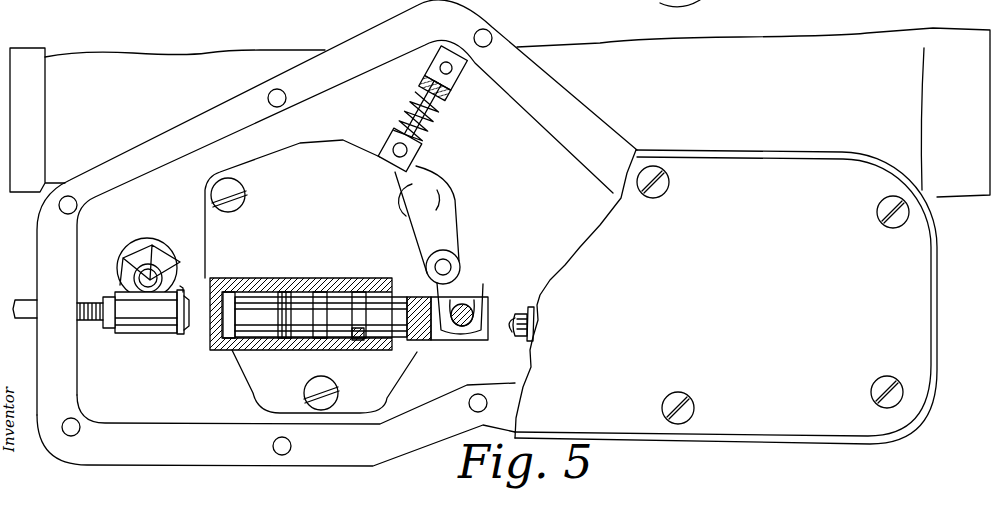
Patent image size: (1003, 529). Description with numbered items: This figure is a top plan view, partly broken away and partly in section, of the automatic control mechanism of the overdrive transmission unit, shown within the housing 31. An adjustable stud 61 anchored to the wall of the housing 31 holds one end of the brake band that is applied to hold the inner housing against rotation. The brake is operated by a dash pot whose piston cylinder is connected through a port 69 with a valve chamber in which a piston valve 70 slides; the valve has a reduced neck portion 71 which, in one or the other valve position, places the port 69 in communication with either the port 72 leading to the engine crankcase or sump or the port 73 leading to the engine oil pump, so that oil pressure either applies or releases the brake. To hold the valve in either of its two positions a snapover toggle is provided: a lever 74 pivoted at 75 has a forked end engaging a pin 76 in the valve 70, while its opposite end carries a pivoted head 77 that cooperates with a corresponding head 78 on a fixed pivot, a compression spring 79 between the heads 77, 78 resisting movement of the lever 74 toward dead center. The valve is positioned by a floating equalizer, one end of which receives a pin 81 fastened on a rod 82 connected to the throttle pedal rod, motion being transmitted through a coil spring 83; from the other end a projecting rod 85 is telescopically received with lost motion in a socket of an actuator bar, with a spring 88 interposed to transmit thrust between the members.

The housing 31 is at (845, 20).
The adjustable stud 61 is at (135, 262).
The port 69 is at (323, 278).
The piston valve 70 is at (420, 342).
The reduced neck portion 71 is at (352, 305).
The port 72 is at (358, 343).
The port 73 is at (289, 346).
The lever 74 is at (435, 228).
The pivot 75 is at (450, 266).
The pin 76 is at (466, 328).
The pivoted head 77 is at (417, 154).
The head 78 is at (456, 86).
The compression spring 79 is at (440, 108).
The pin 81 is at (190, 300).
The rod 82 is at (30, 300).
The coil spring 83 is at (185, 330).
The projecting rod 85 is at (533, 346).
The spring 88 is at (526, 308).